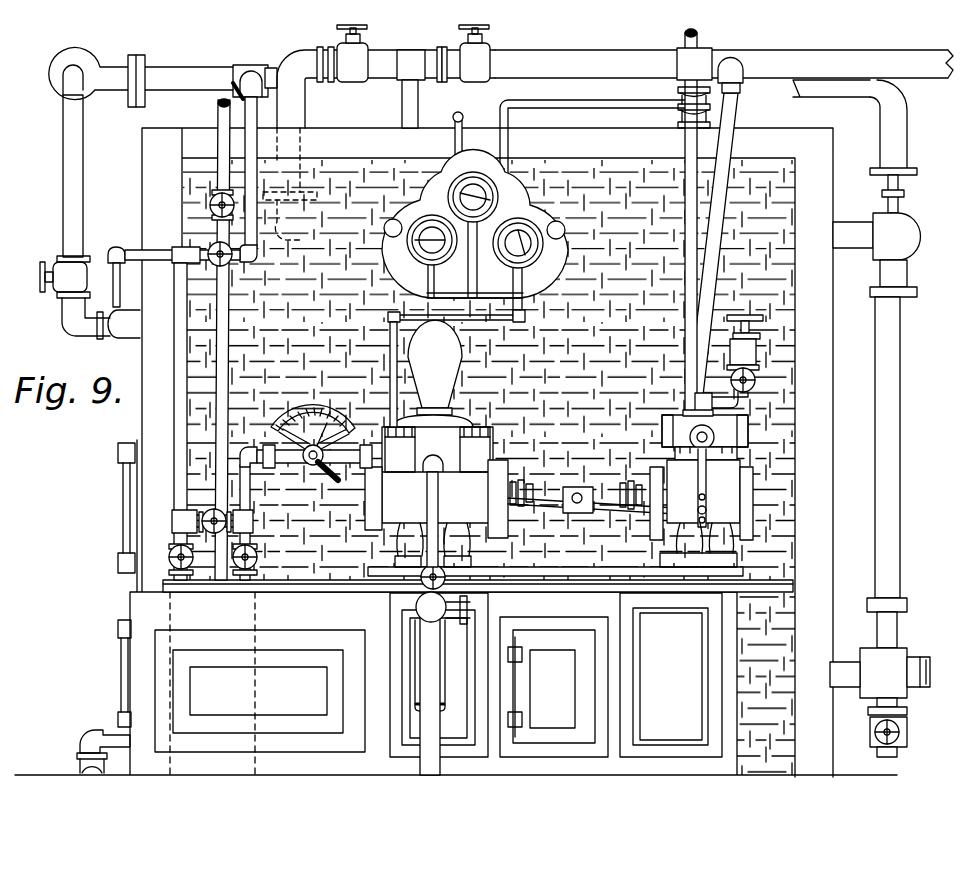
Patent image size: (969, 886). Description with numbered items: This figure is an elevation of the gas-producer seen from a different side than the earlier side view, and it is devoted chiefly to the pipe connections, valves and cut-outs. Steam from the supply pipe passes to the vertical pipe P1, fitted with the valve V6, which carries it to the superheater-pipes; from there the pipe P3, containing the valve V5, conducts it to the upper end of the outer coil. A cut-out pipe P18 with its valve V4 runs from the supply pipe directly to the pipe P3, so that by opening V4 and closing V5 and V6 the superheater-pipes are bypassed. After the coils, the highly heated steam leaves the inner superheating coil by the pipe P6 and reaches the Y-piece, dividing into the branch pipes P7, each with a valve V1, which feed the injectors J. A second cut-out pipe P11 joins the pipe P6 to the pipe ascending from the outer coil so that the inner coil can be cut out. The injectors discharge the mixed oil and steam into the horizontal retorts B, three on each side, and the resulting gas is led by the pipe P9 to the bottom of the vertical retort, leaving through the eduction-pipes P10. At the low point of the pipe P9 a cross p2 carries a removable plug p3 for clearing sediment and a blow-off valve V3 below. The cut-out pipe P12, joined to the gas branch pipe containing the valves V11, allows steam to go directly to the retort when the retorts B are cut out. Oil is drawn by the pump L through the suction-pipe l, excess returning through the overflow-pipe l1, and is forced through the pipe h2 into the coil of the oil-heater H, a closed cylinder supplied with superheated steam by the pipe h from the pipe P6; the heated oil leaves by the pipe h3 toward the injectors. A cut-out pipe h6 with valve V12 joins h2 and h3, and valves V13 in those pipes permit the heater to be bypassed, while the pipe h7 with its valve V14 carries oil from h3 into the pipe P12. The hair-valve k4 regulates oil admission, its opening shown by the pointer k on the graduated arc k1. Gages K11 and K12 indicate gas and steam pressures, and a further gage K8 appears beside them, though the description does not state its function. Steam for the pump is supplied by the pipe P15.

The vertical pipe P1 is at (615, 81).
The pipe P3 is at (380, 98).
The pipe P6 is at (198, 63).
The branch pipes P7 is at (62, 165).
The pipe P9 is at (875, 360).
The eduction-pipes P10 is at (685, 272).
The cut-out pipe P11 is at (680, 80).
The cut-out pipe P12 is at (262, 70).
The pipe P15 is at (715, 185).
The cut-out pipe P18 is at (598, 57).
The valves V1 is at (40, 280).
The valve V3 is at (900, 732).
The valve V4 is at (485, 52).
The valve V5 is at (368, 52).
The valve V6 is at (678, 110).
The valves V11 is at (903, 232).
The valve V12 is at (214, 509).
The valves V13 is at (270, 557).
The valve V14 is at (232, 262).
The pressure gauge K8 is at (543, 243).
The gage K11 is at (407, 240).
The gage K12 is at (490, 198).
The horizontal retorts B is at (853, 234).
The oil-heater H is at (265, 580).
The injectors J is at (101, 318).
The pump L is at (577, 487).
The pipe h is at (229, 339).
The pipe h2 is at (248, 480).
The pipe h3 is at (118, 250).
The cut-out pipe h6 is at (253, 520).
The pipe h7 is at (268, 216).
The pointer k is at (328, 478).
The graduated arc k1 is at (330, 428).
The hair-valve k4 is at (305, 412).
The suction-pipe l is at (443, 683).
The overflow-pipe l1 is at (437, 665).
The cross p2 is at (868, 648).
The plug p3 is at (928, 680).